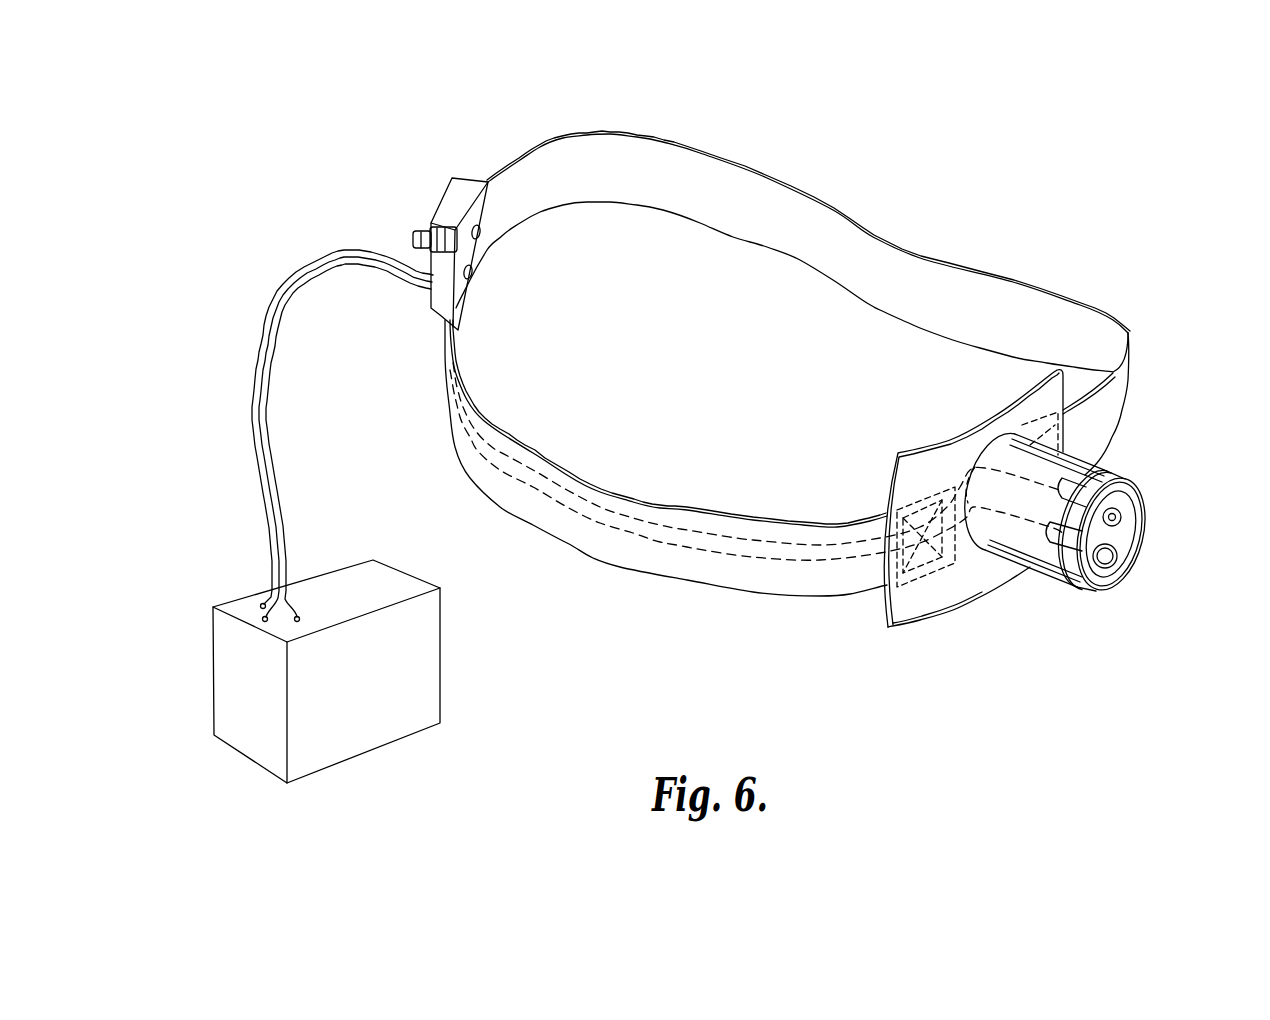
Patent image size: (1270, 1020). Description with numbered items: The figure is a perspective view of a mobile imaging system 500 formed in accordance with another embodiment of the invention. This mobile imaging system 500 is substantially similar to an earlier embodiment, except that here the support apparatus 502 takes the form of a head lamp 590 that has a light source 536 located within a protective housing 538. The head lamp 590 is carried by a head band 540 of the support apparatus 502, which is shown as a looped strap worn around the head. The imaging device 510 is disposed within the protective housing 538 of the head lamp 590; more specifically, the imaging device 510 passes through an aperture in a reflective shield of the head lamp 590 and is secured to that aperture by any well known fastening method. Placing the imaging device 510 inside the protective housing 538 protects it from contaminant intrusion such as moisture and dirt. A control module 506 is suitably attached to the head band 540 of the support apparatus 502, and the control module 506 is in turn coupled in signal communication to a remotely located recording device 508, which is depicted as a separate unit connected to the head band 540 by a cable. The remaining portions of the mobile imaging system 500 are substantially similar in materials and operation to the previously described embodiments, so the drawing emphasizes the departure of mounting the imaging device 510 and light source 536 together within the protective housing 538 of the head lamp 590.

The mobile imaging system 500 is at (1012, 165).
The support apparatus 502 is at (851, 356).
The head band 540 is at (766, 178).
The control module 506 is at (456, 207).
The recording device 508 is at (428, 670).
The imaging device 510 is at (1098, 560).
The light source 536 is at (1112, 559).
The protective housing 538 is at (1023, 567).
The head lamp 590 is at (1074, 592).